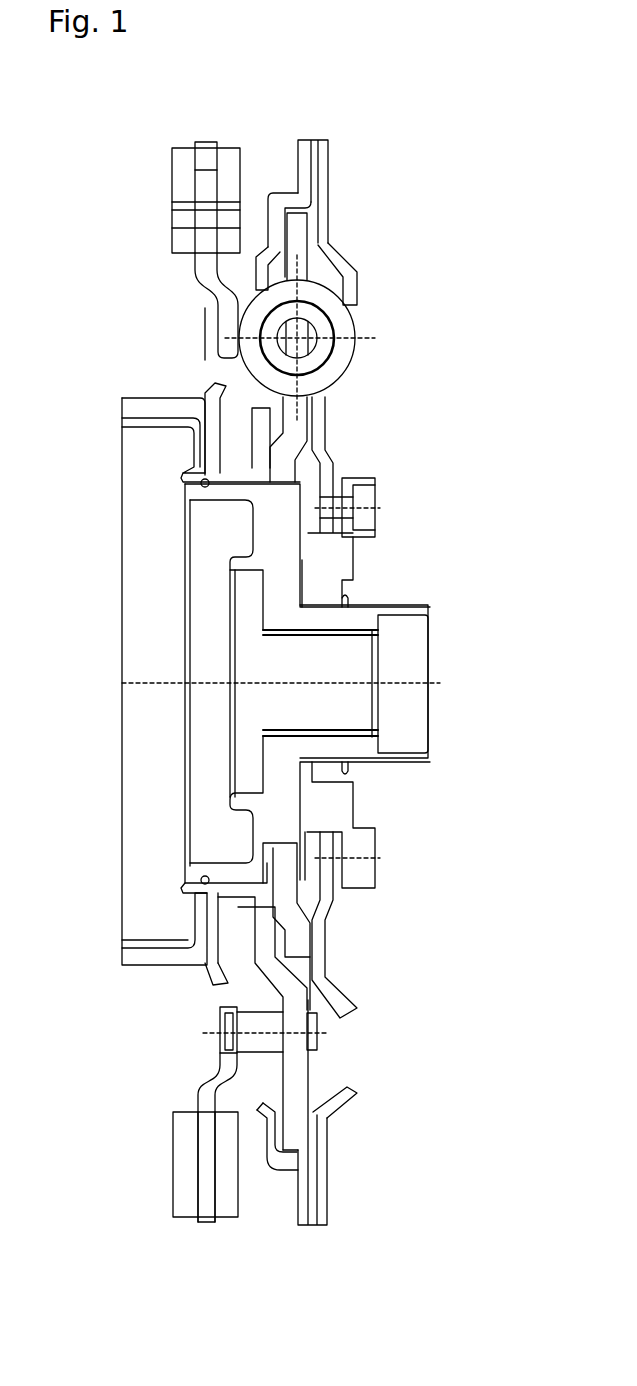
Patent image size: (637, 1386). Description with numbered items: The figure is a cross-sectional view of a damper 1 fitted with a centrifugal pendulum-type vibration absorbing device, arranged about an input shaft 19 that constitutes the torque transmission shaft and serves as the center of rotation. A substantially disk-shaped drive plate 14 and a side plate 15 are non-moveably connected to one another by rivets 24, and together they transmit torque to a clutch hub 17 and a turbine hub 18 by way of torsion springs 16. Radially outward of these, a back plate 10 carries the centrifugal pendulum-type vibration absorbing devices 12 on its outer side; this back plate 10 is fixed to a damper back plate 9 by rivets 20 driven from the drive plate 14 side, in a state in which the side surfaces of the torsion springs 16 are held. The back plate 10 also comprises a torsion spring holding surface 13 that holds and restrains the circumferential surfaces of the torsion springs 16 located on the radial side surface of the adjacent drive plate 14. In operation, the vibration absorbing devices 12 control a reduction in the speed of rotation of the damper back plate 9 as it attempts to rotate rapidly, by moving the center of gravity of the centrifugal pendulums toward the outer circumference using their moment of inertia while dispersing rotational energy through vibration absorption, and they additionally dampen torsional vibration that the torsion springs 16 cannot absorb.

The rotary connector / assembly 1 is at (292, 98).
The damper back plate 9 is at (263, 423).
The back plate 10 is at (200, 281).
The centrifugal pendulum-type vibration absorbing device 12 is at (228, 155).
The torsion spring holding surface 13 is at (201, 338).
The drive plate 14 is at (327, 140).
The side plate 15 is at (318, 213).
The torsion spring 16 is at (343, 318).
The clutch hub 17 is at (298, 439).
The turbine hub 18 is at (288, 577).
The input shaft 19 is at (353, 660).
The rivet 20 is at (217, 1013).
The rivet 24 is at (338, 257).